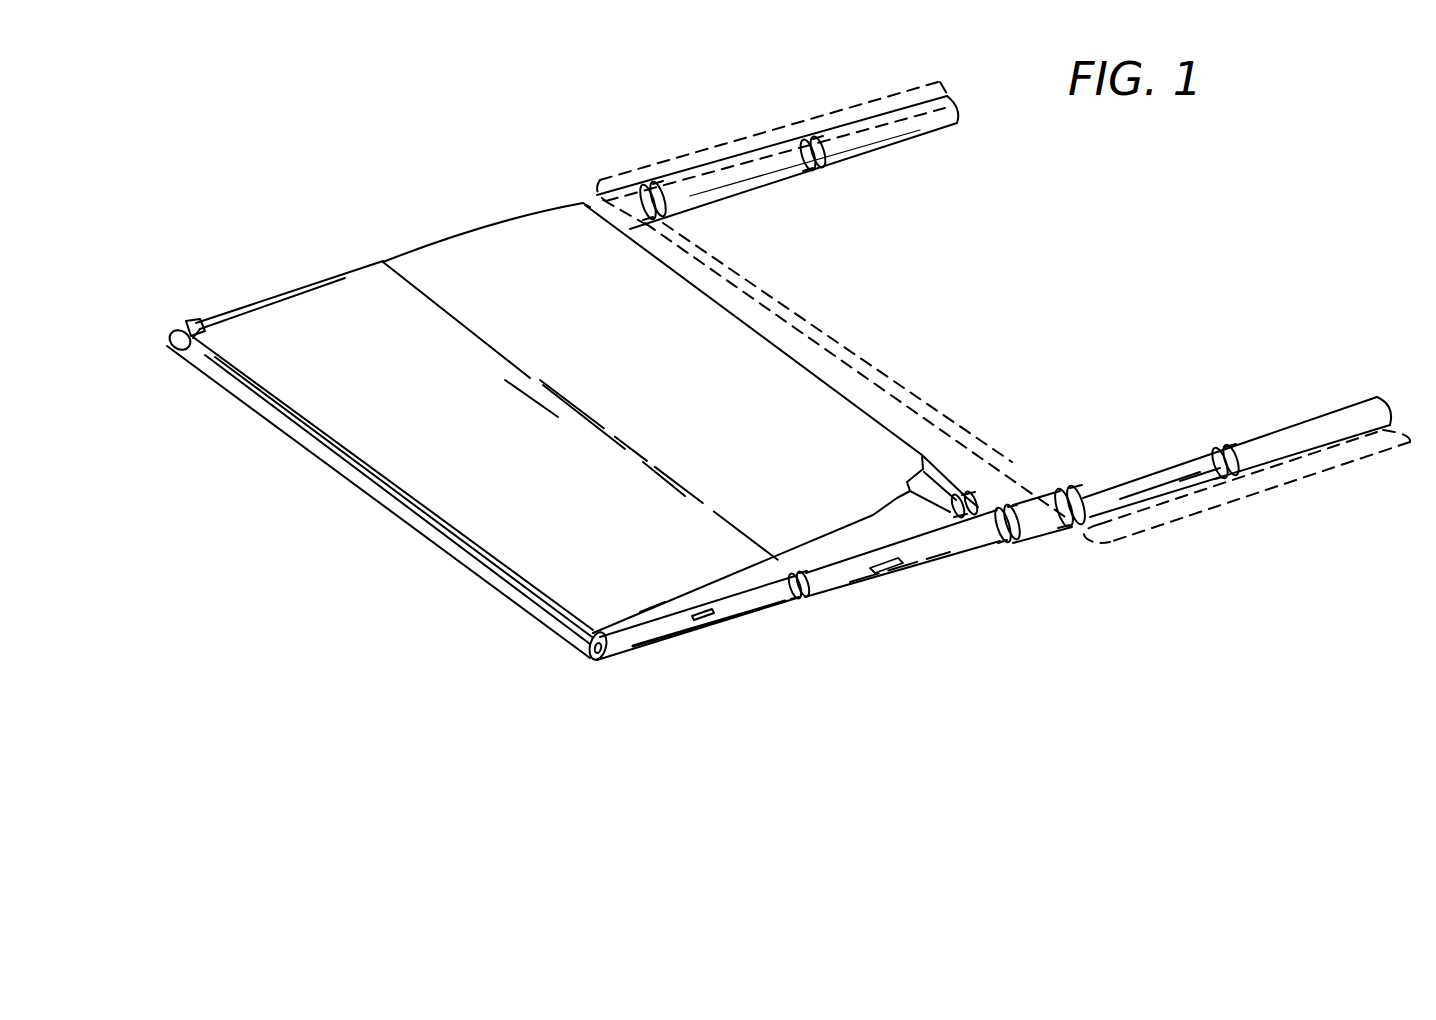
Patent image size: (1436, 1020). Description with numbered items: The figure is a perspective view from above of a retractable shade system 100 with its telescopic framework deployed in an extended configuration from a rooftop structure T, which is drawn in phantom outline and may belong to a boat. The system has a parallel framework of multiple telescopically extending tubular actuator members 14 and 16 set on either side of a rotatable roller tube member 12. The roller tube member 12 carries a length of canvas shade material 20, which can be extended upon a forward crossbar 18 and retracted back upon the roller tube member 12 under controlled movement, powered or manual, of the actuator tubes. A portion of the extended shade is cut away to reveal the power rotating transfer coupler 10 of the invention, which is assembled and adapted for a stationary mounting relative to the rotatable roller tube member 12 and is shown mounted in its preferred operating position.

The retractable shade system 100 is at (537, 192).
The power rotating transfer coupler 10 is at (979, 490).
The roller tube member 12 is at (928, 490).
The tubular actuator member 14 is at (897, 577).
The tubular actuator member 16 is at (692, 633).
The forward crossbar 18 is at (398, 517).
The canvas shade material 20 is at (390, 258).
The rooftop structure T is at (755, 135).